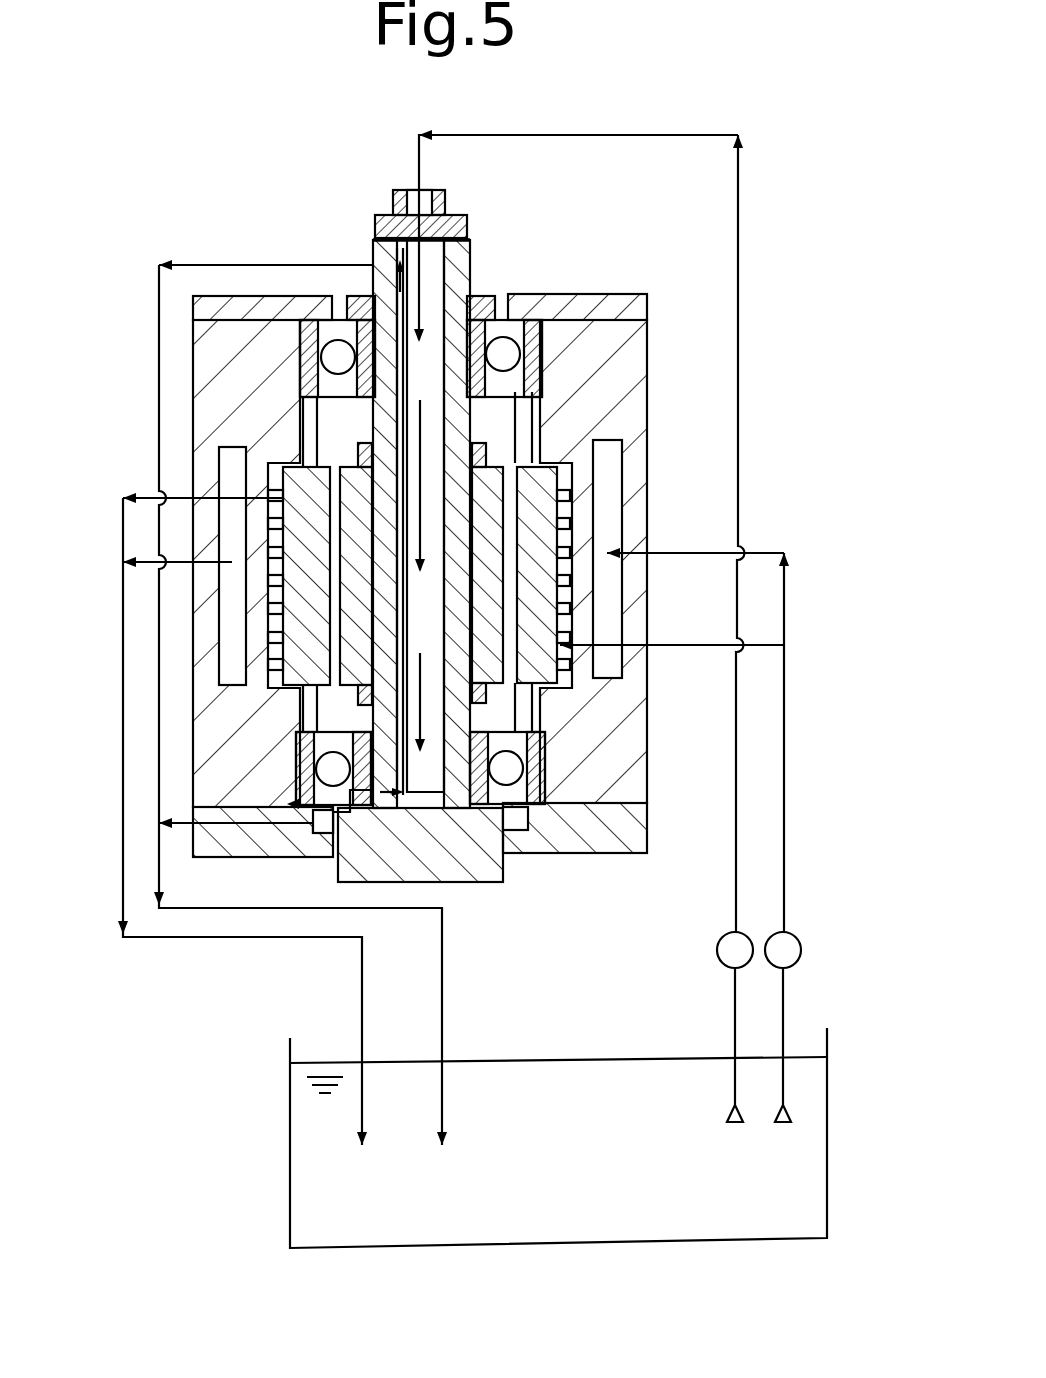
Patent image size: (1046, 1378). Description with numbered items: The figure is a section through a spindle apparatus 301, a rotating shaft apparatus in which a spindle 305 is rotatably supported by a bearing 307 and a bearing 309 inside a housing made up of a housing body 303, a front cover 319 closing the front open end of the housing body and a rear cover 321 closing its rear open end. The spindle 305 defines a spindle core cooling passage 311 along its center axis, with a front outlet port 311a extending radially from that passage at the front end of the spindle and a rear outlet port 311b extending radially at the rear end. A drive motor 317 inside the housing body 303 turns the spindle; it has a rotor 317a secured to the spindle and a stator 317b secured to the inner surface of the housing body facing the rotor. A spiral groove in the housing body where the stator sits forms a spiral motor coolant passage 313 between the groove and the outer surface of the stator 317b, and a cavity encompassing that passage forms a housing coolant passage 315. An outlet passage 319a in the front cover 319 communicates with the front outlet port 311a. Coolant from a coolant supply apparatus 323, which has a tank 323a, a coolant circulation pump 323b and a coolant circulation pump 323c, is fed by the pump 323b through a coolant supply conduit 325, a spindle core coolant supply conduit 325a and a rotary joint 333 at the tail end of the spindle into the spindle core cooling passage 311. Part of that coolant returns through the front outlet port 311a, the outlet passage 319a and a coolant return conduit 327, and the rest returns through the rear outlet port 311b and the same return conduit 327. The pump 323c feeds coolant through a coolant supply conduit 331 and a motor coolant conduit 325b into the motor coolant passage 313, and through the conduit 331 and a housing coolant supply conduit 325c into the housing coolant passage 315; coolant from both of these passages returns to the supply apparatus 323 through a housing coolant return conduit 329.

The spindle apparatus 301 is at (250, 190).
The housing body 303 is at (632, 330).
The spindle 305 is at (468, 252).
The bearing 307 is at (290, 750).
The bearing 309 is at (300, 368).
The spindle core cooling passage 311 is at (390, 620).
The front outlet port 311a is at (340, 870).
The rear outlet port 311b is at (390, 262).
The spiral motor coolant passage 313 is at (563, 655).
The housing coolant passage 315 is at (607, 452).
The drive motor 317 is at (565, 561).
The rotor 317a is at (545, 518).
The stator 317b is at (575, 525).
The front cover 319 is at (567, 843).
The outlet passage 319a is at (290, 857).
The rear cover 321 is at (240, 298).
The coolant supply apparatus 323 is at (496, 1138).
The tank 323a is at (305, 1197).
The coolant circulation pump 323b is at (722, 938).
The coolant circulation pump 323c is at (795, 938).
The coolant supply conduit 325 is at (735, 800).
The spindle core coolant supply conduit 325a is at (566, 134).
The motor coolant conduit 325b is at (688, 647).
The housing coolant supply conduit 325c is at (688, 556).
The coolant return conduit 327 is at (158, 700).
The housing coolant return conduit 329 is at (123, 612).
The coolant supply conduit 331 is at (793, 700).
The rotary joint 333 is at (456, 215).